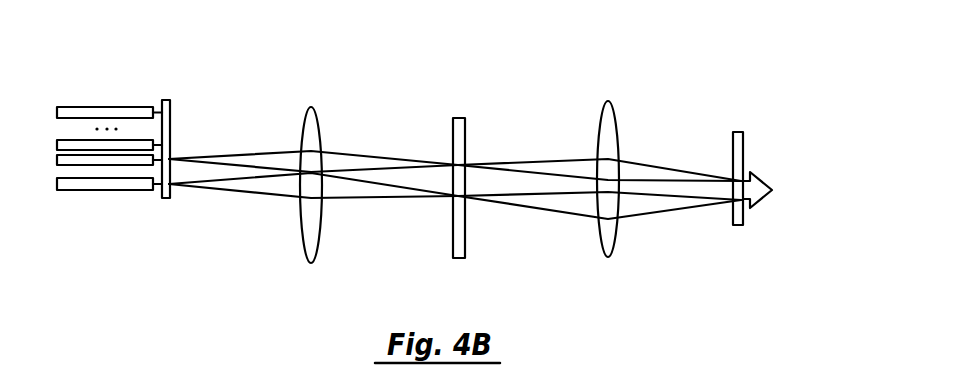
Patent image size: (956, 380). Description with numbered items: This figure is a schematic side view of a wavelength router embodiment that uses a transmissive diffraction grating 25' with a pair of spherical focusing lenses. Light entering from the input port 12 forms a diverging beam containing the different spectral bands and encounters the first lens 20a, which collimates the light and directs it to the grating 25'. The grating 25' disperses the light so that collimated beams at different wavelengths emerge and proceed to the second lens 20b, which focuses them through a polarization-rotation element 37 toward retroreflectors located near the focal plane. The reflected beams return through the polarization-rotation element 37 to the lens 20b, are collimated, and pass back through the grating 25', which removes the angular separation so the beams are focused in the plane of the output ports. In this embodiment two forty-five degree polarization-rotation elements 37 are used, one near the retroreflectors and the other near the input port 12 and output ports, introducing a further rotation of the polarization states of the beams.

The input port 12 is at (170, 196).
The first lens 20a is at (322, 142).
The transmissive diffraction grating 25' is at (491, 165).
The second lens 20b is at (617, 112).
The polarization-rotation element 37 is at (740, 132).